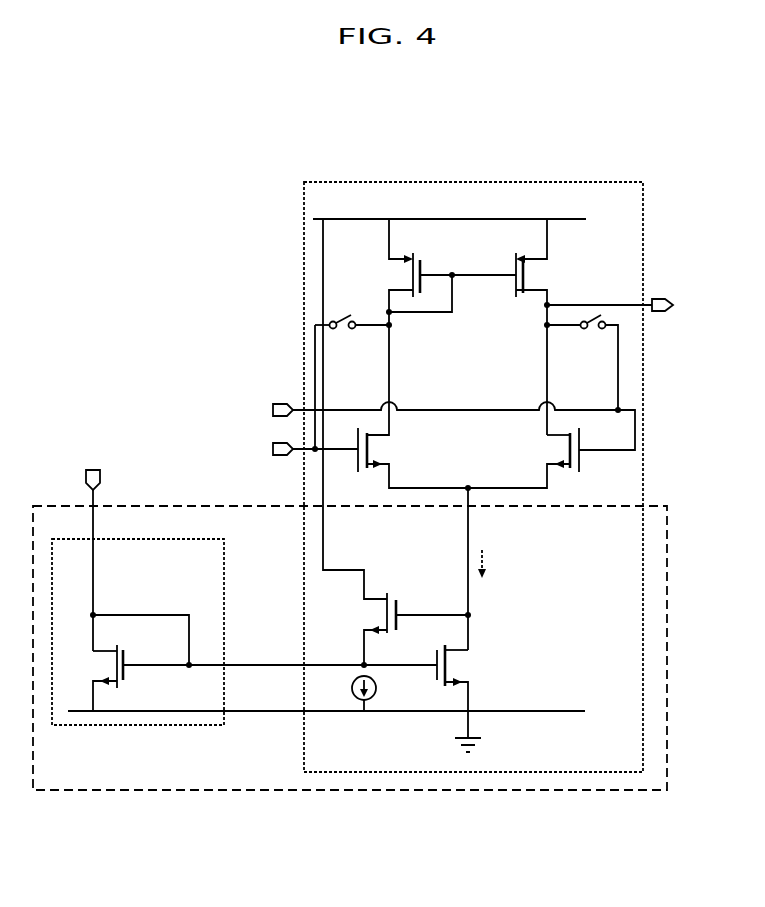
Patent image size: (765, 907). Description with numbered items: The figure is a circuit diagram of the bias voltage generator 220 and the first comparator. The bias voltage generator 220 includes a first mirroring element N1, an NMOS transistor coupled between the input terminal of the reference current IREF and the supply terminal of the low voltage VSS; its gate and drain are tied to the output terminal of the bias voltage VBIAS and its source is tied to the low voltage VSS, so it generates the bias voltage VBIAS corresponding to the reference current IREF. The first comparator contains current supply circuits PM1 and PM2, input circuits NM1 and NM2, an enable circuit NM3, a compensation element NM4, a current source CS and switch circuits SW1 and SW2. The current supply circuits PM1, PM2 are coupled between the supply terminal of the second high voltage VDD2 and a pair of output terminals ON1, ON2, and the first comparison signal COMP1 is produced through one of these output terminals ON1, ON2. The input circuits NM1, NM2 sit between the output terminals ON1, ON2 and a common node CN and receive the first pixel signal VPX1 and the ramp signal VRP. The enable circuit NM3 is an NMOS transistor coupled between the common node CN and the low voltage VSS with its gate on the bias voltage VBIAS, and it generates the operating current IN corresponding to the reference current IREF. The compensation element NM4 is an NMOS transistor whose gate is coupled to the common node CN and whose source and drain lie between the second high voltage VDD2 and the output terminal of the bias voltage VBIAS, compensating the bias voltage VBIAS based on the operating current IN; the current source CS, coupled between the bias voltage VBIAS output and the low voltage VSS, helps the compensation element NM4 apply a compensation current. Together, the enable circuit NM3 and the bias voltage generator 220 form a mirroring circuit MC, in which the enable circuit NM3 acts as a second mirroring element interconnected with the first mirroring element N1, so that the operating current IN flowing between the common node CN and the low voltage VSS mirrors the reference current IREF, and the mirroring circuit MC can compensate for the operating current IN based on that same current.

The bias voltage generator 220 is at (175, 539).
The mirroring circuit MC is at (667, 642).
The current supply circuit PM1 is at (435, 272).
The current supply circuit PM2 is at (548, 327).
The input circuit NM1 is at (413, 406).
The input circuit NM2 is at (523, 458).
The enable circuit NM3 is at (469, 691).
The compensation element NM4 is at (398, 629).
The first mirroring element N1 is at (128, 678).
The switch circuit SW1 is at (350, 383).
The switch circuit SW2 is at (584, 364).
The current source CS is at (351, 686).
The second high voltage VDD2 is at (449, 205).
The output terminal ON1 is at (408, 325).
The output terminal ON2 is at (521, 319).
The first comparison signal COMP1 is at (642, 307).
The first pixel signal VPX1 is at (431, 425).
The ramp signal VRP is at (297, 452).
The common node CN is at (468, 555).
The operating current IN is at (494, 564).
The low voltage VSS is at (488, 747).
The bias voltage VBIAS is at (280, 652).
The reference current IREF is at (131, 553).